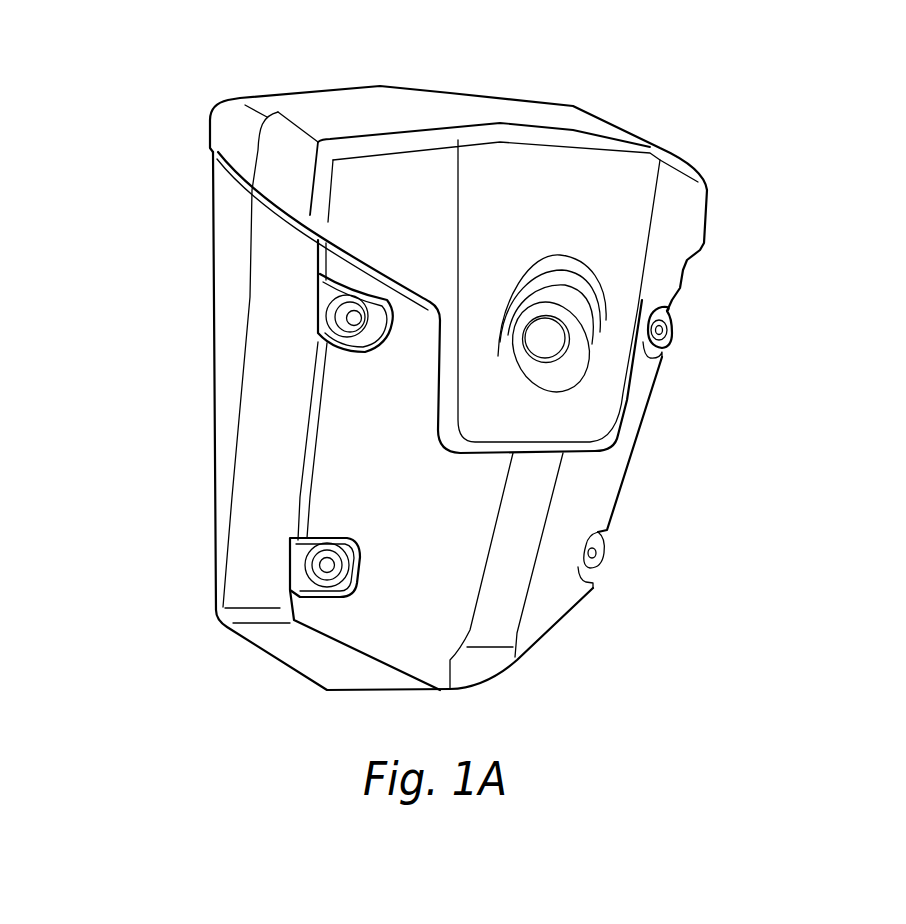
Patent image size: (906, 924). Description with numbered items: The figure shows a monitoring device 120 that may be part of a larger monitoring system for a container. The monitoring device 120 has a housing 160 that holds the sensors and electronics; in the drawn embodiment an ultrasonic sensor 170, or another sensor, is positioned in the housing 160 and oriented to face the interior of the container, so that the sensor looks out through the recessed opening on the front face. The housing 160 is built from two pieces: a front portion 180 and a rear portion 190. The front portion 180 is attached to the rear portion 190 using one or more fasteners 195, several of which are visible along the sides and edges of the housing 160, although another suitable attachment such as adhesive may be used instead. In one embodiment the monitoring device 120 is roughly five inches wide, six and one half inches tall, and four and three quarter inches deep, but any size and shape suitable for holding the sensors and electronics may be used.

The monitoring device 120 is at (181, 172).
The housing 160 is at (340, 113).
The ultrasonic sensor 170 is at (545, 337).
The front portion 180 is at (257, 533).
The rear portion 190 is at (232, 353).
The fasteners 195 is at (312, 572).